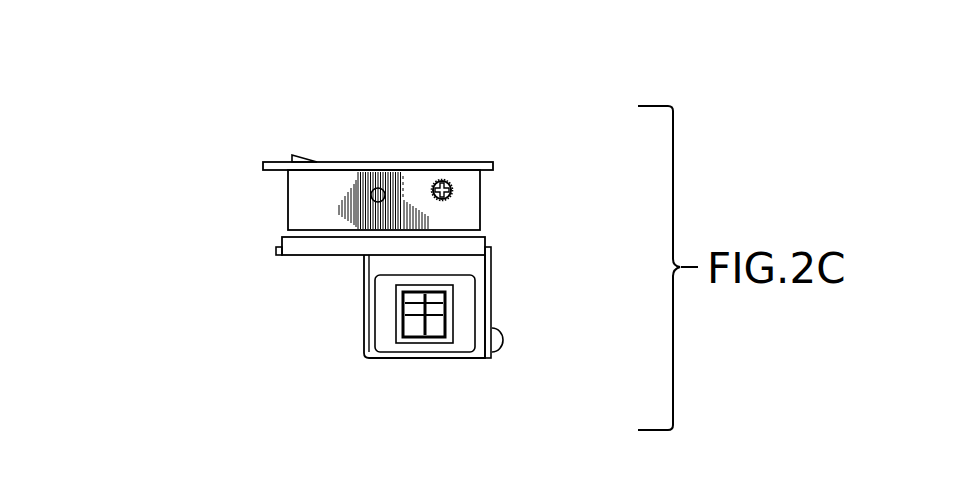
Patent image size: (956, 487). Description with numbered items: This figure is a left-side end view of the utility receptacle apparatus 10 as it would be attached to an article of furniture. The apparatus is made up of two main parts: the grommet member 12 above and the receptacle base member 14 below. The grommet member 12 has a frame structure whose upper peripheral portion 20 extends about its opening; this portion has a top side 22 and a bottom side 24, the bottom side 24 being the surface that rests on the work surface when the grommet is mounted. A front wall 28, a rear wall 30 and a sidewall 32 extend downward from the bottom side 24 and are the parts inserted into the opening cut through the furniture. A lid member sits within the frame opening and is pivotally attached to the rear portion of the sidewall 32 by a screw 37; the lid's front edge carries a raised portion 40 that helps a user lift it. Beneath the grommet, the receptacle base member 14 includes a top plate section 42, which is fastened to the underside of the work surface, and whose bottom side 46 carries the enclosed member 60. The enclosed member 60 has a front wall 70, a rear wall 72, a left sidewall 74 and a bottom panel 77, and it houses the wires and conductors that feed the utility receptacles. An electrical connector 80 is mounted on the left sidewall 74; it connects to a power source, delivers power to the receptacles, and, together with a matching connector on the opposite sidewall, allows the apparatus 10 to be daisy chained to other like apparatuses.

The utility receptacle apparatus 10 is at (145, 226).
The grommet member 12 is at (413, 162).
The receptacle base member 14 is at (364, 333).
The upper peripheral portion 20 is at (475, 162).
The top side 22 is at (282, 162).
The bottom side 24 is at (268, 170).
The front wall 28 is at (288, 200).
The rear wall 30 is at (480, 214).
The sidewall 32 is at (480, 188).
The screw 37 is at (445, 178).
The raised portion 40 is at (303, 158).
The top plate section 42 is at (278, 245).
The bottom side 46 is at (288, 258).
The enclosed member 60 is at (412, 358).
The front wall 70 is at (364, 283).
The rear wall 72 is at (492, 302).
The left sidewall 74 is at (467, 266).
The bottom panel 77 is at (373, 358).
The electrical connector 80 is at (435, 328).